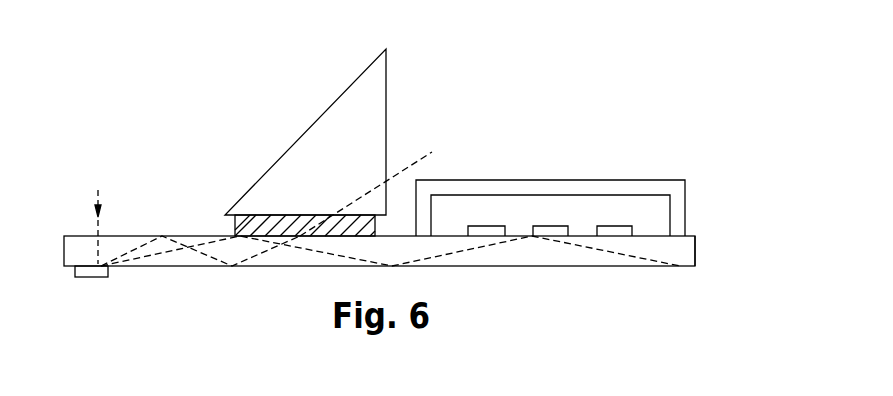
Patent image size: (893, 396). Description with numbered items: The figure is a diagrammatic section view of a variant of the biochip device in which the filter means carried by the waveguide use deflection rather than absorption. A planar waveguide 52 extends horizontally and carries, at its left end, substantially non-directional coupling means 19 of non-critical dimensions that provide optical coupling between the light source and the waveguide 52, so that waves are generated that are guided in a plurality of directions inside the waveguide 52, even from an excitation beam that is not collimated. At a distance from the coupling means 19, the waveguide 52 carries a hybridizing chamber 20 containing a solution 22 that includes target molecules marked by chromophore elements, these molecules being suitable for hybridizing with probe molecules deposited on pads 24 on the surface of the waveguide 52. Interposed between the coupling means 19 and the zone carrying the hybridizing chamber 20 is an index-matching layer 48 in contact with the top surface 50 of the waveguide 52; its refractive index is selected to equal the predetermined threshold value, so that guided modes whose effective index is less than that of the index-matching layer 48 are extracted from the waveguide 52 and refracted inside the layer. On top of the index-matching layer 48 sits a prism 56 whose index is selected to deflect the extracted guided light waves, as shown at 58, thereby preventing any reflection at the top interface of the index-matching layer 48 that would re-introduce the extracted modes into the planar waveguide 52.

The coupling means 19 is at (91, 278).
The hybridizing chamber 20 is at (475, 188).
The solution 22 is at (570, 208).
The pads 24 is at (493, 227).
The index-matching layer 48 is at (230, 215).
The top surface 50 is at (187, 232).
The waveguide 52 is at (672, 247).
The prism 56 is at (323, 136).
The deflected extracted guided light waves 58 is at (428, 148).